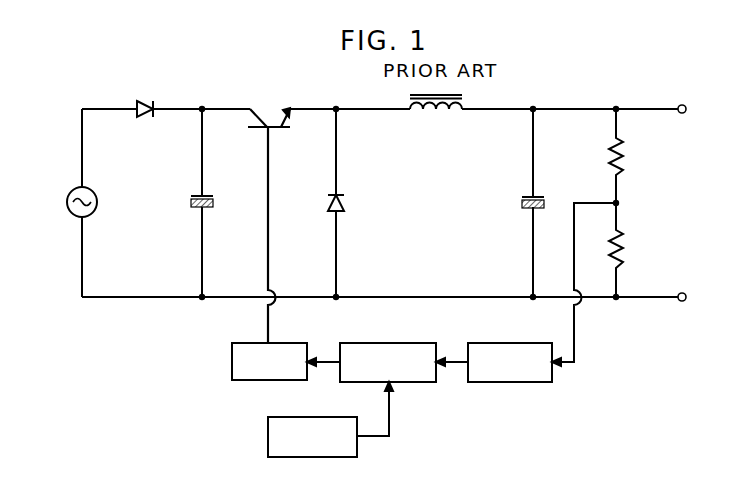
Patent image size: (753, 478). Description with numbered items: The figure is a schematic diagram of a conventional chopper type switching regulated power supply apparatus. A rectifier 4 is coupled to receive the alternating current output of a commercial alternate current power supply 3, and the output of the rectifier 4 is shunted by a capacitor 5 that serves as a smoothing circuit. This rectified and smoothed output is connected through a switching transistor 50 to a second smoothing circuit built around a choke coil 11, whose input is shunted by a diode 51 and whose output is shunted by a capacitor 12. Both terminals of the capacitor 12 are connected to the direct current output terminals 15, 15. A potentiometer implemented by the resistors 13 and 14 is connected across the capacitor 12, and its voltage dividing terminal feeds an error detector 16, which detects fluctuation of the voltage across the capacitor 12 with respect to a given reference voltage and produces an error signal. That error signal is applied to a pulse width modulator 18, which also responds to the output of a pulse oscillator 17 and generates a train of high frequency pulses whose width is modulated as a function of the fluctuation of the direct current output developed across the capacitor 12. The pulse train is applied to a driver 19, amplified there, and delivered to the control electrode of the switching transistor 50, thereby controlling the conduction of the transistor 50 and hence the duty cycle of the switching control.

The commercial alternate current power supply 3 is at (71, 214).
The rectifier 4 is at (143, 101).
The capacitor 5 is at (193, 209).
The switching transistor 50 is at (258, 130).
The diode 51 is at (345, 203).
The choke coil 11 is at (440, 116).
The capacitor 12 is at (523, 206).
The resistor 13 is at (625, 156).
The resistor 14 is at (625, 246).
The direct current output terminals 15 is at (680, 105).
The error detector 16 is at (528, 382).
The pulse oscillator 17 is at (268, 439).
The pulse width modulator 18 is at (422, 382).
The driver 19 is at (232, 346).